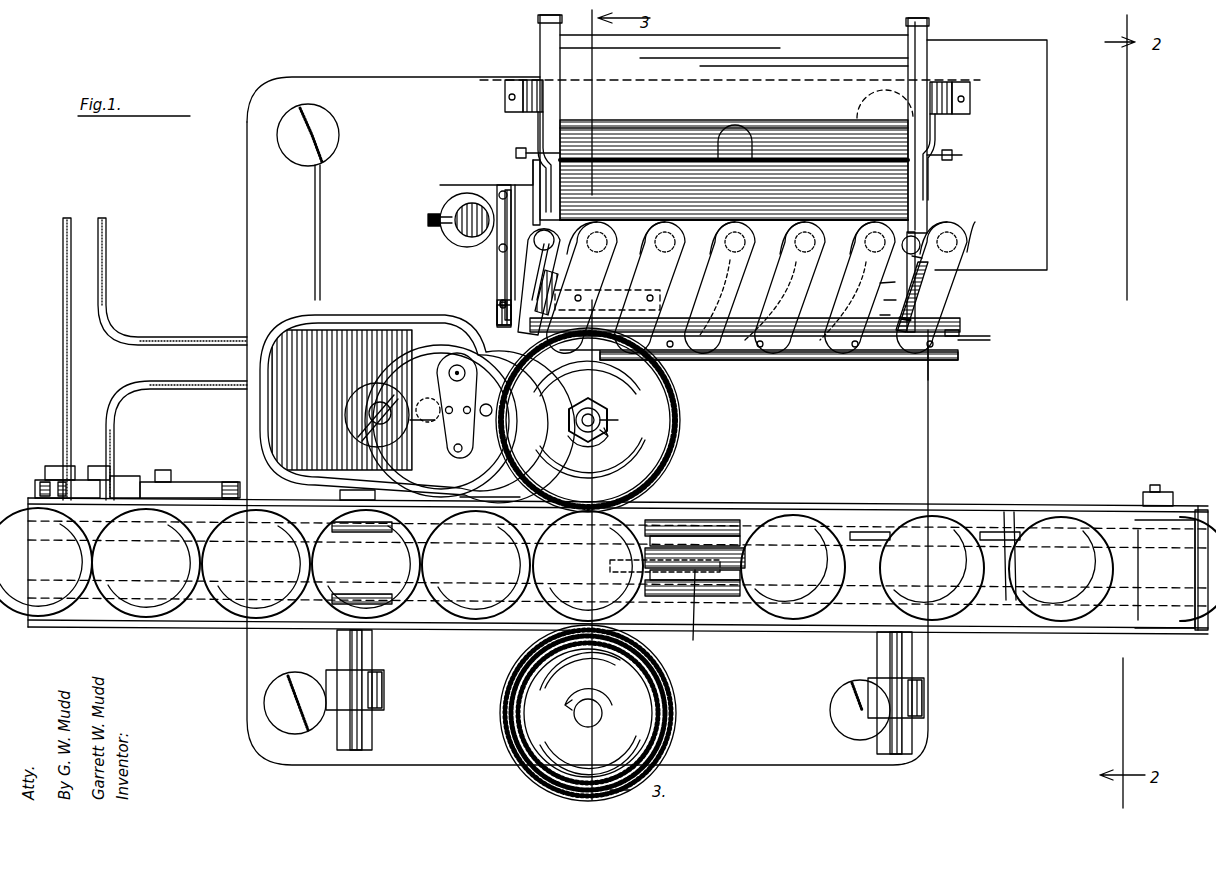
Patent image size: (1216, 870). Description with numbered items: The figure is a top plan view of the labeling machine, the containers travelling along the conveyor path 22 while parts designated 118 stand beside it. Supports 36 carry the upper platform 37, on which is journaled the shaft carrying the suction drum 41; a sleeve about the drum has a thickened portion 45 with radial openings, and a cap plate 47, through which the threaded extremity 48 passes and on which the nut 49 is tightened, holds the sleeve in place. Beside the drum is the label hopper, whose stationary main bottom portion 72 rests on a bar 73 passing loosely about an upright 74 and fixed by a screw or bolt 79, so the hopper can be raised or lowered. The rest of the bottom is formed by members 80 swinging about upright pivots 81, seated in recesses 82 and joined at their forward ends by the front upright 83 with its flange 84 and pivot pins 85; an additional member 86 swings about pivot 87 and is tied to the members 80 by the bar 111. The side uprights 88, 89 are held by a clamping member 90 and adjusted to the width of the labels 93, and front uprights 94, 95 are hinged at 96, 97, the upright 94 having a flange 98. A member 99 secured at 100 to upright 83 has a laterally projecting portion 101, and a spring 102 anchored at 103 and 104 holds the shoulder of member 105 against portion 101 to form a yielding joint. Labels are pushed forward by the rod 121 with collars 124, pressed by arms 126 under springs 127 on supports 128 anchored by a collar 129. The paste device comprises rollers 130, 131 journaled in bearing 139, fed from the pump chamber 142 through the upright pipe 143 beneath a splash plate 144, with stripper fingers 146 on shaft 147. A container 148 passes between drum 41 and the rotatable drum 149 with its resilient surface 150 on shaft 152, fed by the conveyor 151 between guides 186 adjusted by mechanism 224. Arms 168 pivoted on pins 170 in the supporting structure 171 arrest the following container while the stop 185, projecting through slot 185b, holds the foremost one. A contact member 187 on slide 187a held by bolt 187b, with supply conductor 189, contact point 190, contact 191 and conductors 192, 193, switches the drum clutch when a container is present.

The conveyor 22 is at (464, 590).
The supports 36 is at (295, 150).
The platform 37 is at (396, 100).
The drum 41 is at (538, 480).
The thickened portion 45 is at (675, 445).
The cap plate 47 is at (665, 420).
The threaded extremity 48 is at (592, 416).
The nut 49 is at (620, 421).
The main bottom portion 72 is at (1035, 233).
The bar 73 is at (518, 185).
The upright 74 is at (470, 210).
The screw or bolt 79 is at (428, 214).
The members 80 is at (770, 296).
The upright pivots 81 is at (782, 276).
The recesses 82 is at (846, 270).
The upright 83 is at (808, 354).
The flange 84 is at (868, 360).
The pivot pins 85 is at (775, 345).
The additional member 86 is at (590, 265).
The upright pivot 87 is at (612, 228).
The upright 88 is at (730, 127).
The upright 89 is at (927, 30).
The clamping member 90 is at (545, 30).
The labels 93 is at (808, 170).
The upright 94 is at (905, 286).
The upright 95 is at (560, 260).
The hinge 96 is at (550, 225).
The hinge 97 is at (912, 230).
The flange 98 is at (872, 312).
The member 99 is at (975, 334).
The securing point 100 is at (298, 318).
The laterally projecting portion 101 is at (895, 352).
The spring 102 is at (920, 288).
The anchor 103 is at (925, 268).
The anchor 104 is at (905, 330).
The member 105 is at (900, 307).
The bar 111 is at (638, 284).
The plate 118 is at (497, 272).
The bar or rod 121 is at (776, 158).
The collars 124 is at (516, 150).
The arms 126 is at (538, 130).
The springs 127 is at (532, 80).
The supports 128 is at (505, 100).
The collar 129 is at (507, 80).
The roller 130 is at (492, 414).
The roller 131 is at (490, 316).
The bearing 139 is at (447, 373).
The chamber 142 is at (380, 447).
The upright pipe 143 is at (425, 400).
The splash plate 144 is at (418, 440).
The stripper fingers 146 is at (482, 486).
The upright shaft 147 is at (457, 405).
The container 148 is at (640, 515).
The rotatable drum 149 is at (545, 734).
The resilient surface 150 is at (500, 708).
The conveyor 151 is at (1010, 512).
The shaft 152 is at (592, 720).
The arms 168 is at (728, 522).
The pins 170 is at (1150, 500).
The supporting structure 171 is at (1130, 556).
The stop 185 is at (610, 565).
The slot 185b is at (694, 640).
The guides 186 is at (270, 505).
The contact member 187 is at (128, 476).
The slide 187a is at (230, 482).
The bolt 187b is at (160, 484).
The supply conductor 189 is at (62, 420).
The contact point 190 is at (90, 480).
The contact 191 is at (96, 450).
The conductor 192 is at (142, 388).
The conductor 193 is at (192, 340).
The adjusting mechanism 224 is at (410, 688).